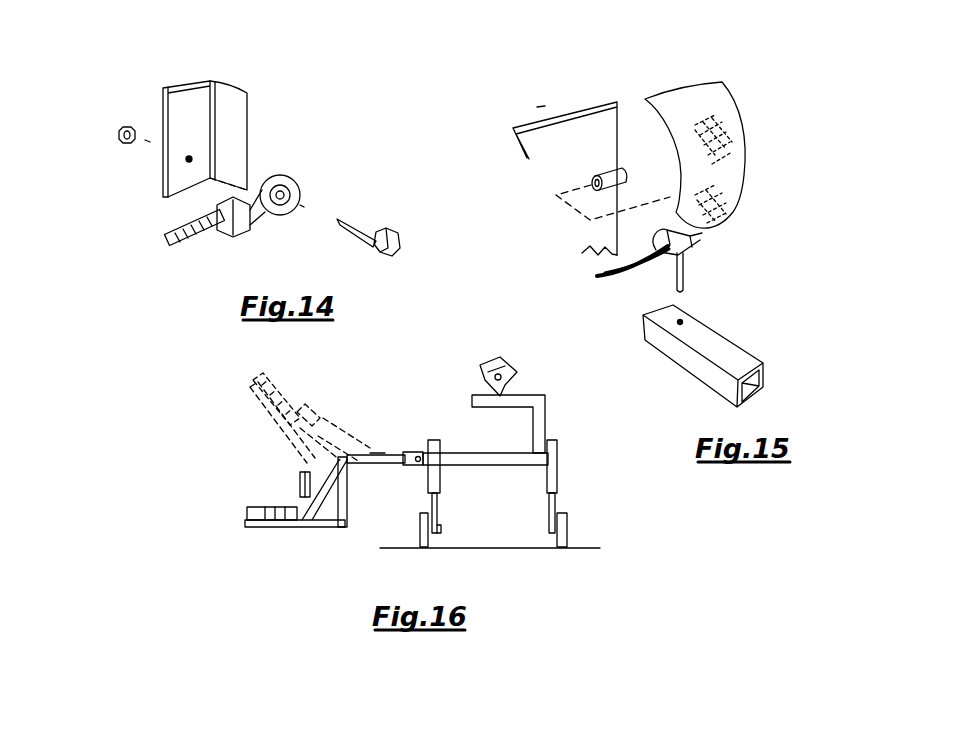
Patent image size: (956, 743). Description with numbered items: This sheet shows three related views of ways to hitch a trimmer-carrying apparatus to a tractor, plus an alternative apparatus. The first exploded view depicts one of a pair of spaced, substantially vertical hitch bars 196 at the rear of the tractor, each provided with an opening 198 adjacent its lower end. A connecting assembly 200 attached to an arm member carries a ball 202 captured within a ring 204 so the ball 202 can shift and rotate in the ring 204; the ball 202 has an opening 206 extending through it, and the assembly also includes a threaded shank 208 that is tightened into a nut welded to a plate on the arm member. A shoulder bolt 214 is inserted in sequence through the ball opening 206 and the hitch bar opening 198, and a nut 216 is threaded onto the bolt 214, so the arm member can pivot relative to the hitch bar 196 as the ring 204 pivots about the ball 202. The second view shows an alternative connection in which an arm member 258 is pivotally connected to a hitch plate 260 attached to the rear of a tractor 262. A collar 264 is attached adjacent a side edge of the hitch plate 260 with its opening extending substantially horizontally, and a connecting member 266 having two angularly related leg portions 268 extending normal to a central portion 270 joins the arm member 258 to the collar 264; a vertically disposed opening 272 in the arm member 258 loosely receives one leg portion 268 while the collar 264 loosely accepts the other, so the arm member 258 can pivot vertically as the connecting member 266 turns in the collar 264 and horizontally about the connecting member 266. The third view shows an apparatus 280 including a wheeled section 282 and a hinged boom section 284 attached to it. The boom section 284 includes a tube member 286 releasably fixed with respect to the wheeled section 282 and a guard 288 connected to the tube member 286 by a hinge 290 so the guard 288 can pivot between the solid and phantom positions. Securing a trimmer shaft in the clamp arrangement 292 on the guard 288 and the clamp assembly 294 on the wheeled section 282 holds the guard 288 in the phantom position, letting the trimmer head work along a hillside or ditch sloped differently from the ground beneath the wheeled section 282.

In FIG. 14, the hitch bar 196 is at (235, 117).
In FIG. 14, the opening 198 is at (187, 163).
In FIG. 14, the connecting assembly 200 is at (312, 210).
In FIG. 14, the ball 202 is at (283, 208).
In FIG. 14, the ring 204 is at (273, 177).
In FIG. 14, the opening 206 is at (283, 193).
In FIG. 14, the threaded shank 208 is at (204, 240).
In FIG. 14, the shoulder bolt 214 is at (388, 226).
In FIG. 14, the nut 216 is at (124, 143).
In FIG. 15, the arm member 258 is at (730, 355).
In FIG. 15, the hitch plate 260 is at (575, 125).
In FIG. 15, the tractor 262 is at (766, 130).
In FIG. 15, the collar 264 is at (595, 173).
In FIG. 15, the connecting member 266 is at (686, 259).
In FIG. 15, the leg portions 268 is at (708, 237).
In FIG. 15, the central portion 270 is at (633, 274).
In FIG. 15, the opening 272 is at (684, 321).
In FIG. 16, the apparatus 280 is at (559, 410).
In FIG. 16, the wheeled section 282 is at (478, 466).
In FIG. 16, the boom section 284 is at (258, 418).
In FIG. 16, the tube member 286 is at (397, 448).
In FIG. 16, the guard 288 is at (248, 390).
In FIG. 16, the hinge 290 is at (376, 452).
In FIG. 16, the clamp arrangement 292 is at (315, 403).
In FIG. 16, the clamp assembly 294 is at (512, 364).